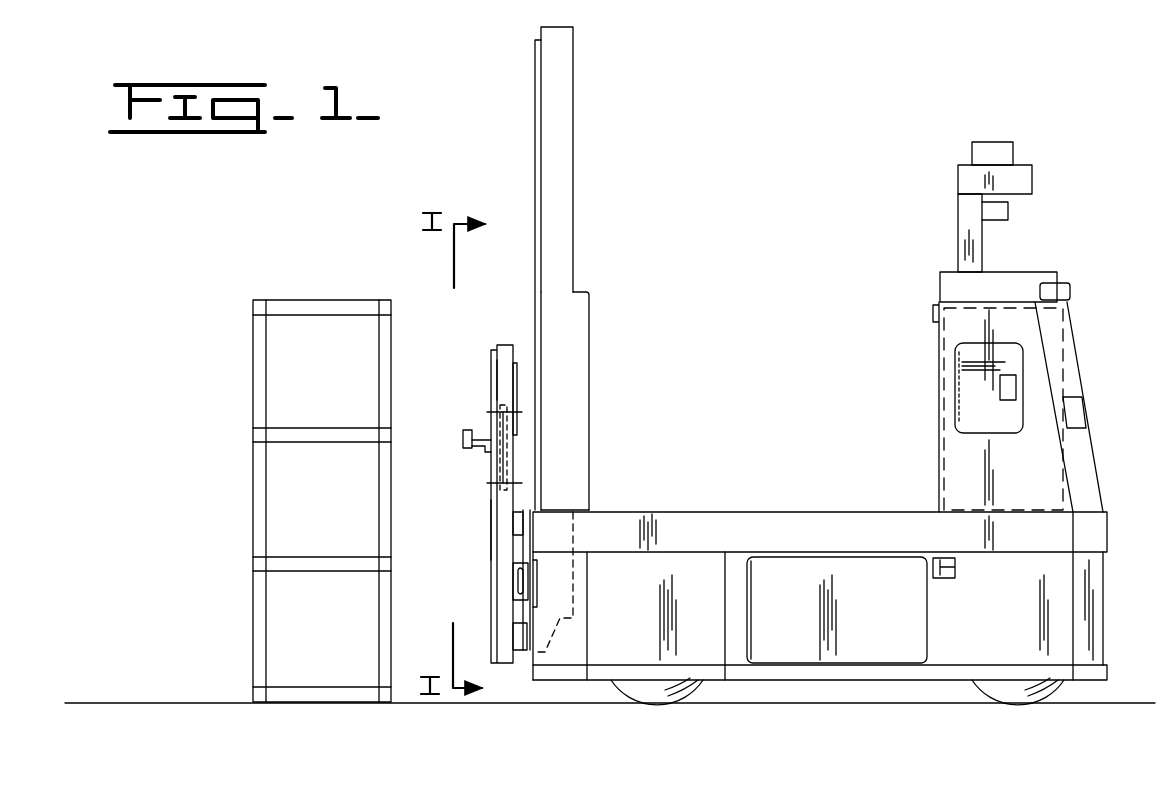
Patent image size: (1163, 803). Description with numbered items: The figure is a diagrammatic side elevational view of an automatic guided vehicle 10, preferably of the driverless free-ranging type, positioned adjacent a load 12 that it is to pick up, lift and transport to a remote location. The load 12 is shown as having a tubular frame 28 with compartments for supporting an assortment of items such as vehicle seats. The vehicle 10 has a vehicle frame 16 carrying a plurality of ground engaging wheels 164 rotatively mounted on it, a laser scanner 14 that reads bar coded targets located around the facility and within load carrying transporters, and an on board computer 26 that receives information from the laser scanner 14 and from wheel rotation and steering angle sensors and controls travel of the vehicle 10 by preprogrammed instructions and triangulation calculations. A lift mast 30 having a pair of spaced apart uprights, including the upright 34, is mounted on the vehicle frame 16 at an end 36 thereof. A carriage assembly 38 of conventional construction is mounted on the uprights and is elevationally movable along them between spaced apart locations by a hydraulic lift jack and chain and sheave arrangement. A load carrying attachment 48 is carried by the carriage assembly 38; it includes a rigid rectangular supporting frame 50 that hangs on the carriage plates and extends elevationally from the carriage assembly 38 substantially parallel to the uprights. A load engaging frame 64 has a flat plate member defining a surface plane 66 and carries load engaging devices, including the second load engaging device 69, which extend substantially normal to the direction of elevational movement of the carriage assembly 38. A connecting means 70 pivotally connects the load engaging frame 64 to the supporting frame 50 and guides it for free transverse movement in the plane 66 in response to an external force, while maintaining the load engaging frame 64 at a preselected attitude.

The automatic guided vehicle 10 is at (745, 88).
The load 12 is at (255, 332).
The laser scanner 14 is at (1032, 148).
The vehicle frame 16 is at (1095, 530).
The on board computer 26 is at (950, 398).
The tubular frame 28 is at (253, 436).
The lift mast 30 is at (576, 250).
The second upright 34 is at (558, 120).
The end of vehicle frame 36 is at (525, 603).
The carriage assembly 38 is at (538, 612).
The load carrying attachment 48 is at (462, 358).
The supporting frame 50 is at (533, 372).
The load engaging frame 64 is at (490, 515).
The surface plane 66 is at (491, 380).
The second load engaging device 69 is at (461, 441).
The connecting means 70 is at (522, 447).
The ground engaging wheels 164 is at (653, 690).